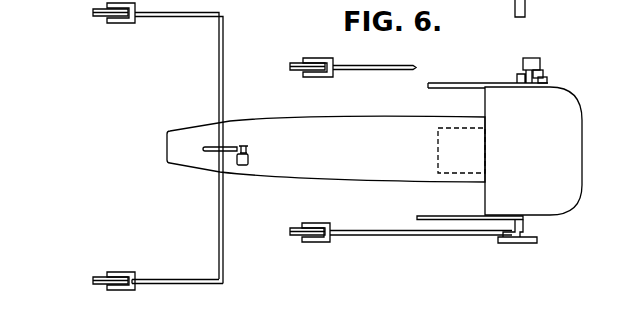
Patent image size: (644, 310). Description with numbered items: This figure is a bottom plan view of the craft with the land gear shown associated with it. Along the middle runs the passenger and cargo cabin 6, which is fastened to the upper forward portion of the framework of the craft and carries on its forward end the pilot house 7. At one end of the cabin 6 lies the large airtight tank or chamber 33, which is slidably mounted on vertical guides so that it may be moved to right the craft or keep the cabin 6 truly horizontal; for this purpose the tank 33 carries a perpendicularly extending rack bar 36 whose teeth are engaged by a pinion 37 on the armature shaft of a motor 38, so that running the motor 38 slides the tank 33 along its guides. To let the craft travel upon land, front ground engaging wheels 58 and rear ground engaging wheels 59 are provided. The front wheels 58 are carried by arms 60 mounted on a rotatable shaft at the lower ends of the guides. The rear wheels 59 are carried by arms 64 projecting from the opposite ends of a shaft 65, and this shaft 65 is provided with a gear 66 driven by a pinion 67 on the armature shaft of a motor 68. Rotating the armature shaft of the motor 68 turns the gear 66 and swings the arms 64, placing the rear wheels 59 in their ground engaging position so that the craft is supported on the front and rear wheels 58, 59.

The passenger and cargo cabin 6 is at (326, 149).
The pilot house 7 is at (420, 151).
The airtight tank or chamber 33 is at (499, 163).
The rack bar 36 is at (548, 79).
The pinion 37 is at (543, 70).
The motor 38 is at (531, 58).
The front ground engaging wheels 58 is at (289, 68).
The rear ground engaging wheels 59 is at (92, 12).
The arms 60 is at (386, 67).
The arms 64 is at (207, 285).
The shaft 65 is at (218, 200).
The gear 66 is at (206, 146).
The pinion 67 is at (245, 148).
The motor 68 is at (250, 158).